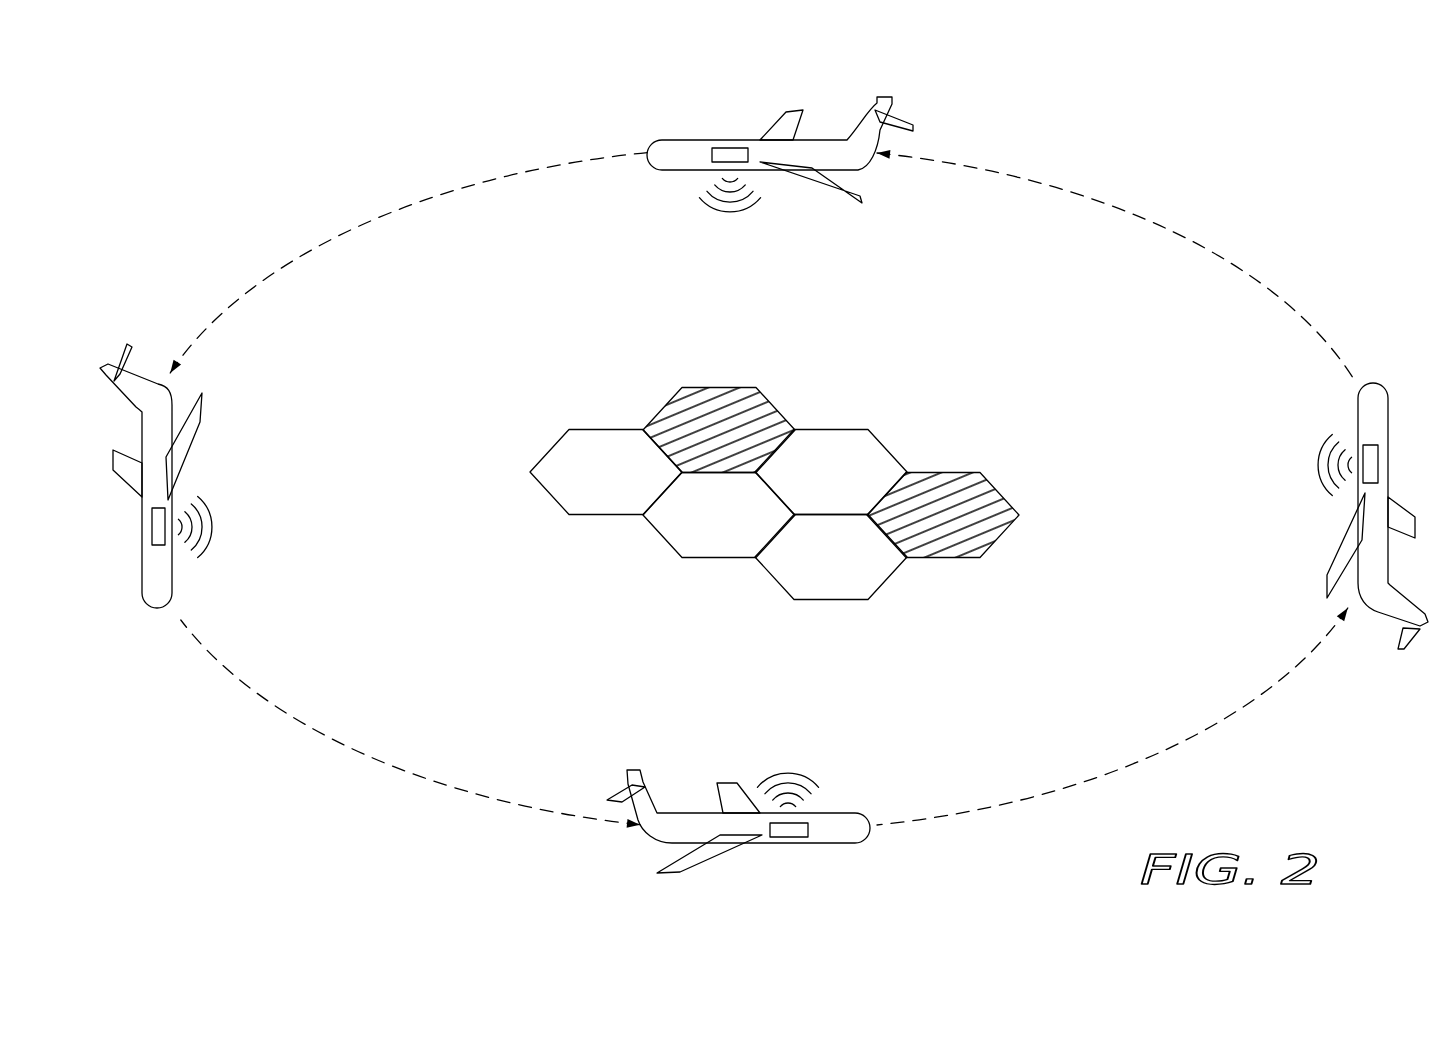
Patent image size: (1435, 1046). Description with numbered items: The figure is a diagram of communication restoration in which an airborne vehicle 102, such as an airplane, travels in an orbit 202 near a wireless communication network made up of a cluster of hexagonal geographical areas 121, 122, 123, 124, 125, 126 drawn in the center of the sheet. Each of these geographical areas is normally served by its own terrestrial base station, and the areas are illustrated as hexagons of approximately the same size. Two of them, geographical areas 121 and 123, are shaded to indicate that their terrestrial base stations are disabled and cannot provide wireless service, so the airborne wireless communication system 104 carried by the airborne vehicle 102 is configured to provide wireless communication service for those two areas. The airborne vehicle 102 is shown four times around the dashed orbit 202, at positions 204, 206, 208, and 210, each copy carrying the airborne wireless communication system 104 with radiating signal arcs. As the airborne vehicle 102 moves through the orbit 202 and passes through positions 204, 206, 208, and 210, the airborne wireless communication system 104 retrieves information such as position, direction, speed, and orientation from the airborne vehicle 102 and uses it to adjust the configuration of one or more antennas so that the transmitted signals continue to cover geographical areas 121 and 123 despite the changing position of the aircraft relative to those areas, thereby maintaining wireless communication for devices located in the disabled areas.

The airborne vehicle 102 is at (764, 464).
The airborne wireless communication system 104 is at (730, 148).
The geographical area 121 is at (775, 410).
The geographical area 122 is at (885, 452).
The geographical area 123 is at (942, 560).
The geographical area 124 is at (608, 518).
The geographical area 125 is at (720, 560).
The geographical area 126 is at (830, 602).
The orbit 202 is at (363, 223).
The position 204 is at (648, 135).
The position 206 is at (220, 500).
The position 208 is at (865, 792).
The position 210 is at (1394, 365).